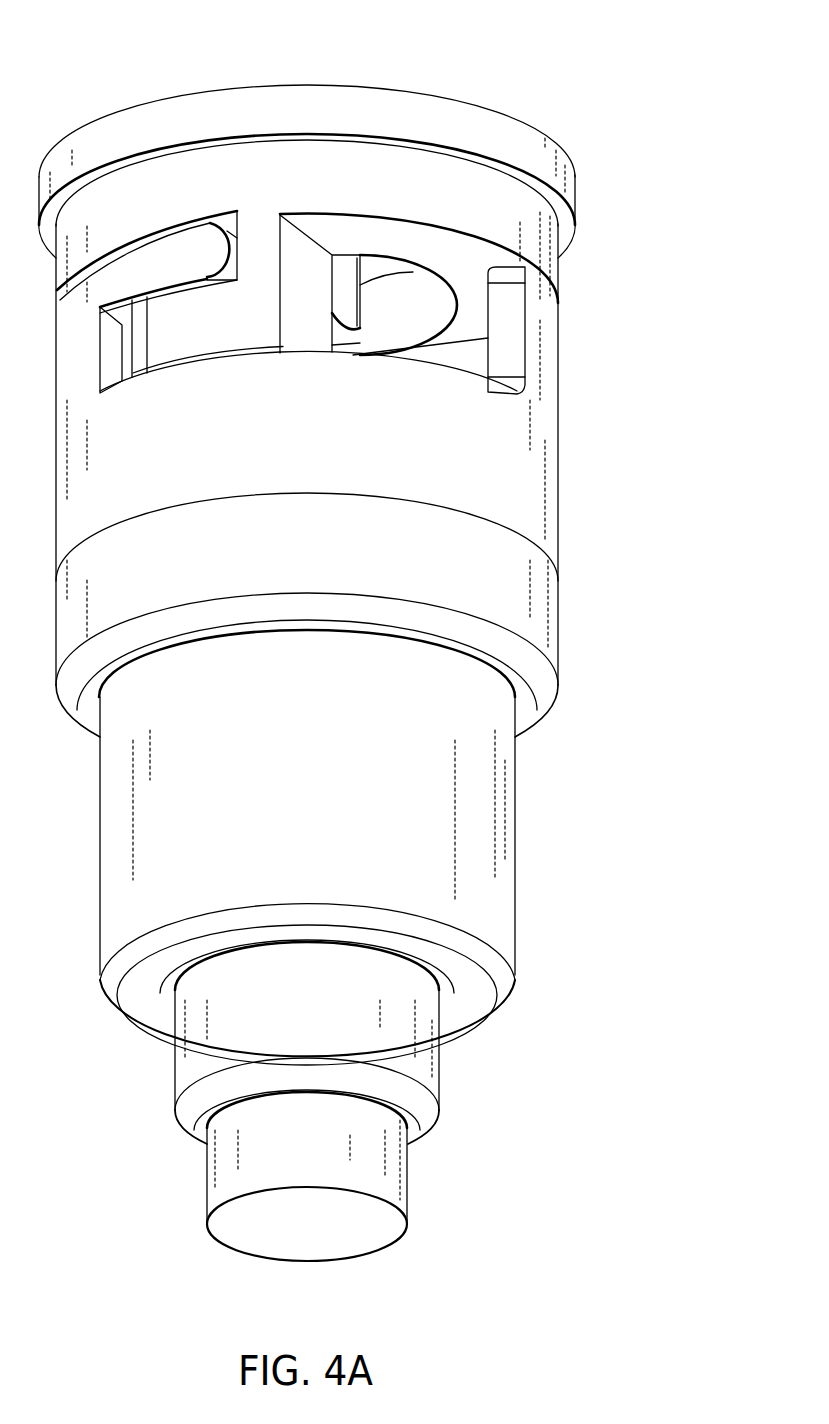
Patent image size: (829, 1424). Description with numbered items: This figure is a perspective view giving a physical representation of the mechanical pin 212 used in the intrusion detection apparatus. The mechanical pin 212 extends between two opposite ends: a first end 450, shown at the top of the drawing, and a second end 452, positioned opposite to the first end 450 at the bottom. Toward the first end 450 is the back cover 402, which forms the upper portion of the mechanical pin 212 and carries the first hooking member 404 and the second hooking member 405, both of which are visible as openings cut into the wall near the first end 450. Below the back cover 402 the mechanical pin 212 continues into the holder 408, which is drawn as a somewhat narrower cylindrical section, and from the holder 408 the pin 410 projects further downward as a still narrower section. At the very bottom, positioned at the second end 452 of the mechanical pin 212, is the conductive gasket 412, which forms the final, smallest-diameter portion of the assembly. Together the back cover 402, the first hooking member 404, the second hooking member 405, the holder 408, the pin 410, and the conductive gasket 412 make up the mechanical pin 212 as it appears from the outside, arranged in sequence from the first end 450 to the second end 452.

The mechanical pin 212 is at (495, 66).
The first end 450 is at (183, 88).
The back cover 402 is at (582, 190).
The first hooking member 404 is at (230, 332).
The second hooking member 405 is at (194, 242).
The holder 408 is at (522, 836).
The pin 410 is at (449, 1072).
The conductive gasket 412 is at (418, 1183).
The second end 452 is at (284, 1277).